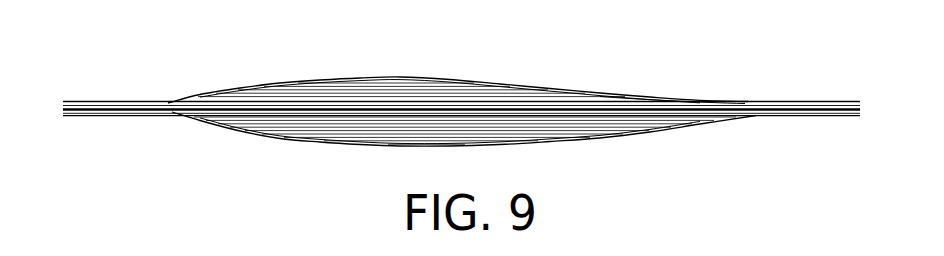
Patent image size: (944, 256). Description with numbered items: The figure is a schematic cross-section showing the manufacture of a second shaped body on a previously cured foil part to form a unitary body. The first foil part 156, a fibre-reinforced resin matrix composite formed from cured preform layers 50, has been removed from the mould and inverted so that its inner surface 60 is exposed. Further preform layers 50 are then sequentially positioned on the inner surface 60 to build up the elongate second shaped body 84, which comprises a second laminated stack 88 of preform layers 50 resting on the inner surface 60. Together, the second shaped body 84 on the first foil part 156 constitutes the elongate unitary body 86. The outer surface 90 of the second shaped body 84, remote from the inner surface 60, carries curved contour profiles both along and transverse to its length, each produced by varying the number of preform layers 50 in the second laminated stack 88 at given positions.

The preform layers 50 is at (244, 93).
The inner surface 60 is at (324, 100).
The second shaped body 84 is at (461, 92).
The elongate unitary body 86 is at (503, 97).
The second laminated stack 88 is at (568, 98).
The outer surface 90 is at (646, 98).
The first foil part 156 is at (289, 126).